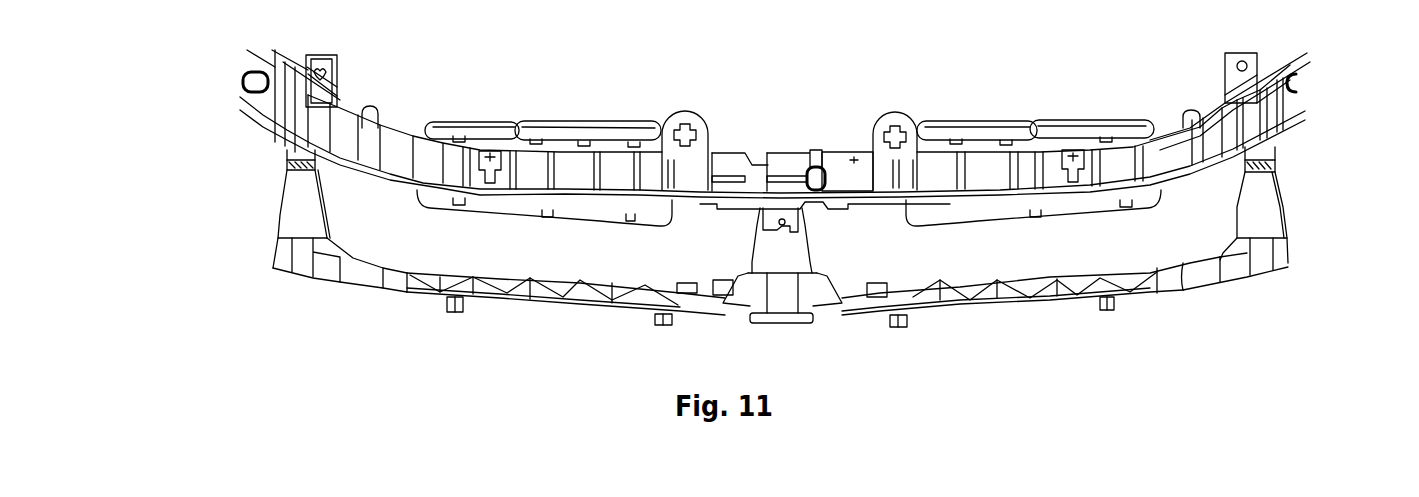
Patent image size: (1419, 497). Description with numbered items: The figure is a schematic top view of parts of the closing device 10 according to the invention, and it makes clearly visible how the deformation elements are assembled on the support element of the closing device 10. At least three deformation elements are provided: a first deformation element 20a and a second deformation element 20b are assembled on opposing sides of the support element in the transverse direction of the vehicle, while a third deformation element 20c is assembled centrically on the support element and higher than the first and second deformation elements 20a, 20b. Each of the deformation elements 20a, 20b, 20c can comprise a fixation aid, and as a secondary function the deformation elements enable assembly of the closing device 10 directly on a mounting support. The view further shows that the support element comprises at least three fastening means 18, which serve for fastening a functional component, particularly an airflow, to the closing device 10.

The closing device 10 is at (222, 165).
The fastening means 18 is at (663, 327).
The first deformation element 20a is at (290, 218).
The second deformation element 20b is at (1262, 200).
The third deformation element 20c is at (778, 255).